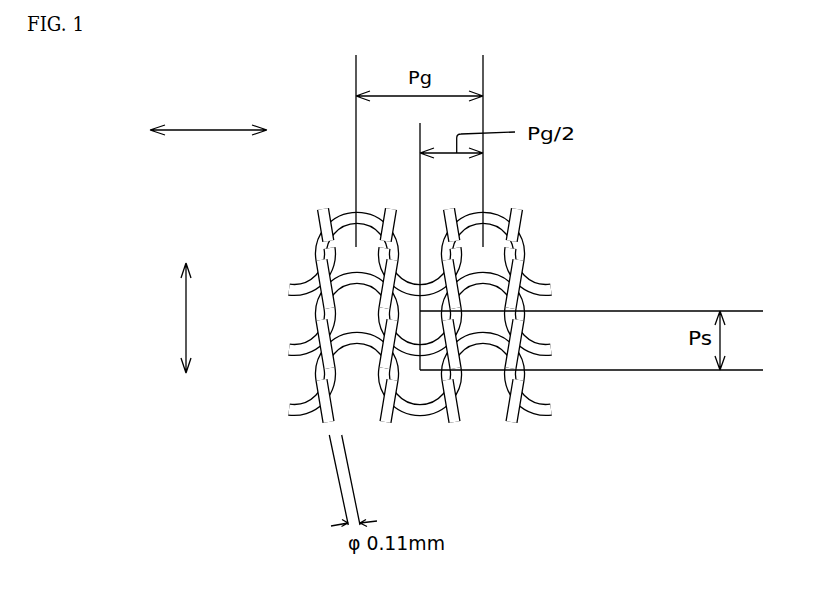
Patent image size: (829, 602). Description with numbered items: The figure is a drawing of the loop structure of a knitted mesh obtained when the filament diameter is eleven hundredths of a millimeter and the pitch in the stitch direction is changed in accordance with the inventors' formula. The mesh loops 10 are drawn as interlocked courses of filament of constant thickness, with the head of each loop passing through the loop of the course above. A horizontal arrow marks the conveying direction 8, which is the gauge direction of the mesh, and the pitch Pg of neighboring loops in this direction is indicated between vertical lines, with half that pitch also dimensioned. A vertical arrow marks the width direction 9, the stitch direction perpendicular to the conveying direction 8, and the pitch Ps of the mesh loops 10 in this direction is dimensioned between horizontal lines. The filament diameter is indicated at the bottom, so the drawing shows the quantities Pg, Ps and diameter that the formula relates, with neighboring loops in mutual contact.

The conveying direction 8 is at (207, 131).
The width direction 9 is at (186, 323).
The mesh loops 10 is at (496, 214).